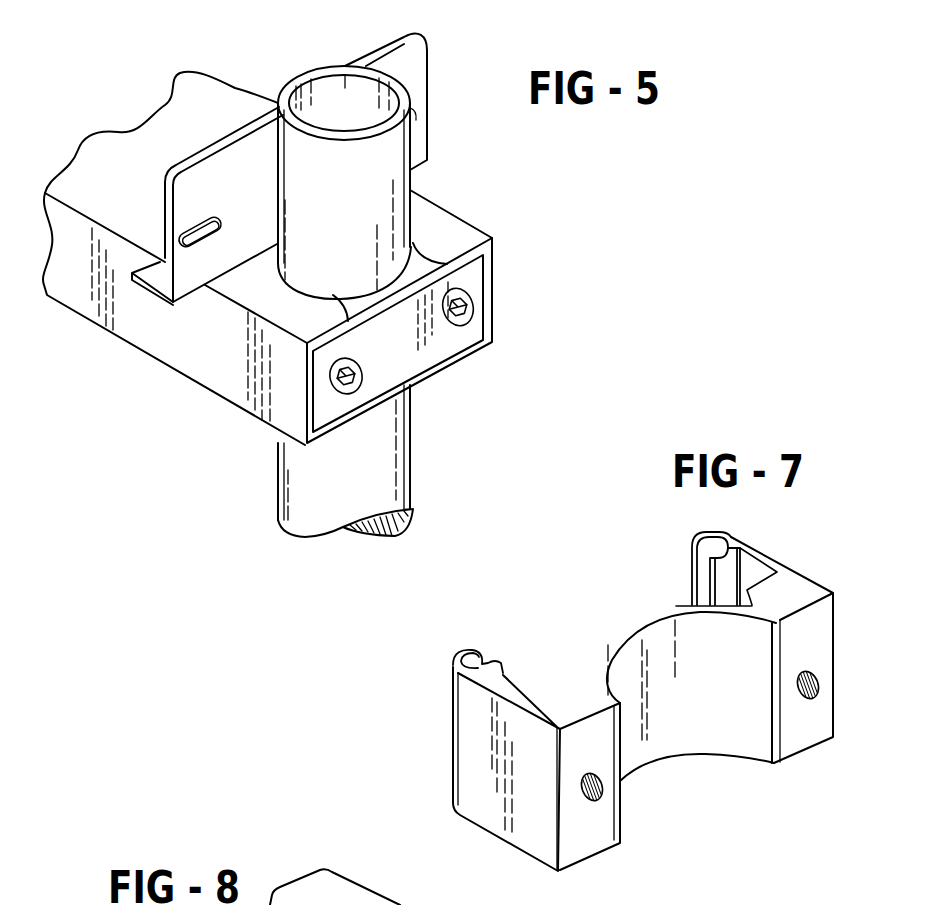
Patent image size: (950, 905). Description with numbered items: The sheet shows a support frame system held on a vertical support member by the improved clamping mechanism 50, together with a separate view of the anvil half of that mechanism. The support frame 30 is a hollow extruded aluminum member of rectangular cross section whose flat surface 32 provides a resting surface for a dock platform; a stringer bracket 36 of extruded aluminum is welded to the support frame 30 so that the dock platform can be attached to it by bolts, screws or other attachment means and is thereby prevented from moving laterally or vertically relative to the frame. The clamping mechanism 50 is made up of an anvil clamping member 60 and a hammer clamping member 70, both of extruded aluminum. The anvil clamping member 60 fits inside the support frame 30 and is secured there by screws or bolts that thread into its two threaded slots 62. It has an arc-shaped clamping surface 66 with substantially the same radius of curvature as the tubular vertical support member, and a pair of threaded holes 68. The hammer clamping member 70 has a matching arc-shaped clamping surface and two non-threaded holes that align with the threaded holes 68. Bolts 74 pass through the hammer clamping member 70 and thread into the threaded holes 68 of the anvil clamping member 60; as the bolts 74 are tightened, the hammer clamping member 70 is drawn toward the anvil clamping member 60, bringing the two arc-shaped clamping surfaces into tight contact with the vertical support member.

In FIG. 5, the support frame 30 is at (188, 338).
In FIG. 5, the flat surface 32 is at (121, 160).
In FIG. 5, the stringer bracket 36 is at (247, 123).
In FIG. 5, the clamping mechanism 50 is at (452, 200).
In FIG. 7, the anvil clamping member 60 is at (676, 708).
In FIG. 7, the threaded slot 62 is at (478, 647).
In FIG. 7, the arc-shaped clamping surface 66 is at (679, 717).
In FIG. 7, the threaded hole 68 is at (816, 690).
In FIG. 5, the hammer clamping member 70 is at (438, 344).
In FIG. 5, the bolt 74 is at (468, 308).